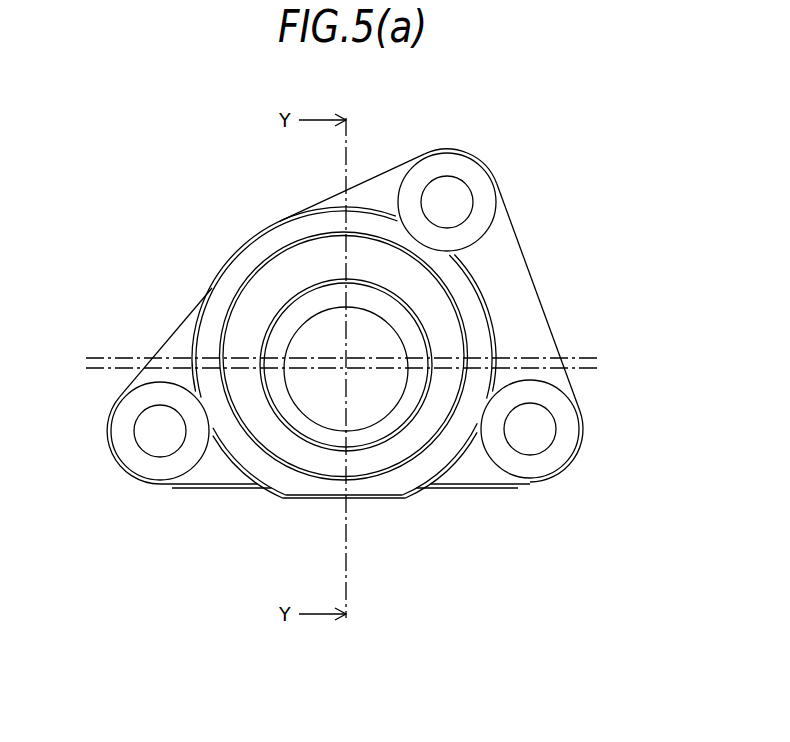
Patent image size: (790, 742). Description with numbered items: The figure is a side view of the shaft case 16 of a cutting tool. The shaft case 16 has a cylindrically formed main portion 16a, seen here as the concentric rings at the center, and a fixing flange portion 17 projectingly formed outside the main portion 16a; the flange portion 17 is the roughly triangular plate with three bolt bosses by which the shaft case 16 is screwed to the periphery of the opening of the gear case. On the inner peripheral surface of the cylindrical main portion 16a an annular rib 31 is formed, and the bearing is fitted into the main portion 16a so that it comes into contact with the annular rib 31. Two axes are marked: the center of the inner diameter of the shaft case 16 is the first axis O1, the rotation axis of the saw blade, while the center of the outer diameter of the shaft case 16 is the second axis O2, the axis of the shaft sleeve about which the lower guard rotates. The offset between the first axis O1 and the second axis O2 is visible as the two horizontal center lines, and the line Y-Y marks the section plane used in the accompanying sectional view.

The shaft case 16 is at (527, 245).
The main portion 16a is at (500, 353).
The fixing flange portion 17 is at (527, 320).
The annular rib 31 is at (272, 433).
The first axis O1 is at (345, 368).
The second axis O2 is at (346, 357).